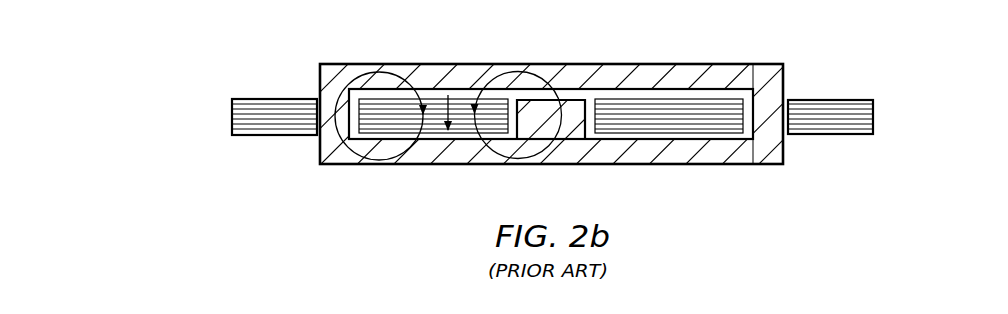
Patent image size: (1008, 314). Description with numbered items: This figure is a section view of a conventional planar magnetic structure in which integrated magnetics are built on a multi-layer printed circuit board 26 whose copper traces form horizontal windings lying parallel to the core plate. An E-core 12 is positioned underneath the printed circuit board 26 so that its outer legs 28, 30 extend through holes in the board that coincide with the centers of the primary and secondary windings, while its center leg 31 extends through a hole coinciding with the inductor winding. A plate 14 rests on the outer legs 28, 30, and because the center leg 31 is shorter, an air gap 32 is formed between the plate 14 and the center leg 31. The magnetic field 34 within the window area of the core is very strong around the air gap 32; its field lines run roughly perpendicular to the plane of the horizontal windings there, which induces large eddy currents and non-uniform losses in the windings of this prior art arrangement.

The E-core 12 is at (458, 153).
The plate 14 is at (332, 61).
The multi-layer printed circuit board 26 is at (832, 92).
The outer leg 28 is at (336, 140).
The outer leg 30 is at (778, 138).
The center leg 31 is at (565, 136).
The air gap 32 is at (574, 86).
The magnetic field 34 is at (368, 72).